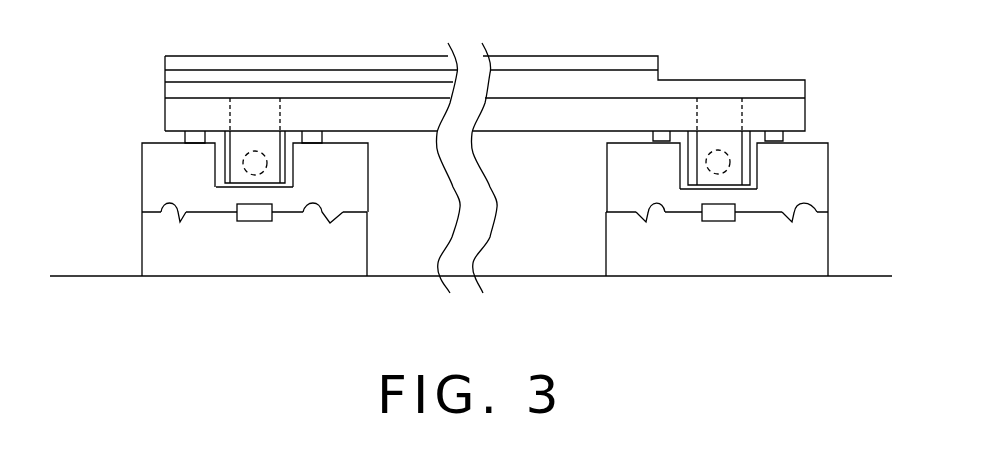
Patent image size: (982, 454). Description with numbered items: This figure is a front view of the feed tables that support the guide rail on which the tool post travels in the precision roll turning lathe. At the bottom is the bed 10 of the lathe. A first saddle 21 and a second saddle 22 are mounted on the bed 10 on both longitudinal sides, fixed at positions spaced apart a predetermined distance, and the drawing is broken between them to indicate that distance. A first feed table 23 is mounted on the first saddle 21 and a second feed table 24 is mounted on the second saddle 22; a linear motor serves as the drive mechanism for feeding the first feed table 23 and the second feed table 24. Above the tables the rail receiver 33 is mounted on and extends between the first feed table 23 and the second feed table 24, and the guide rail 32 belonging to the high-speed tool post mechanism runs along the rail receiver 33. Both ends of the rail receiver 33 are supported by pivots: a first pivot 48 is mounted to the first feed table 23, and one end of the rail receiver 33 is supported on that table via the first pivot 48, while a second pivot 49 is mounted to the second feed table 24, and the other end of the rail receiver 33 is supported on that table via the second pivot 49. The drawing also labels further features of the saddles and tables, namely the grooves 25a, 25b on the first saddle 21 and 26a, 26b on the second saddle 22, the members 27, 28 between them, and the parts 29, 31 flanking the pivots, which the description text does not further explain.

The bed 10 is at (100, 273).
The first saddle 21 is at (353, 244).
The second saddle 22 is at (635, 250).
The first feed table 23 is at (170, 175).
The second feed table 24 is at (627, 173).
The first groove 25a is at (160, 213).
The second groove 25b is at (310, 213).
The third groove 26a is at (660, 207).
The fourth groove 26b is at (813, 211).
The fastening member 27 is at (720, 221).
The fastening member 28 is at (255, 221).
The third support 29 is at (272, 207).
The fourth support 31 is at (737, 208).
The guide rail 32 is at (340, 62).
The rail receiver 33 is at (532, 115).
The first pivot 48 is at (257, 145).
The second pivot 49 is at (717, 145).